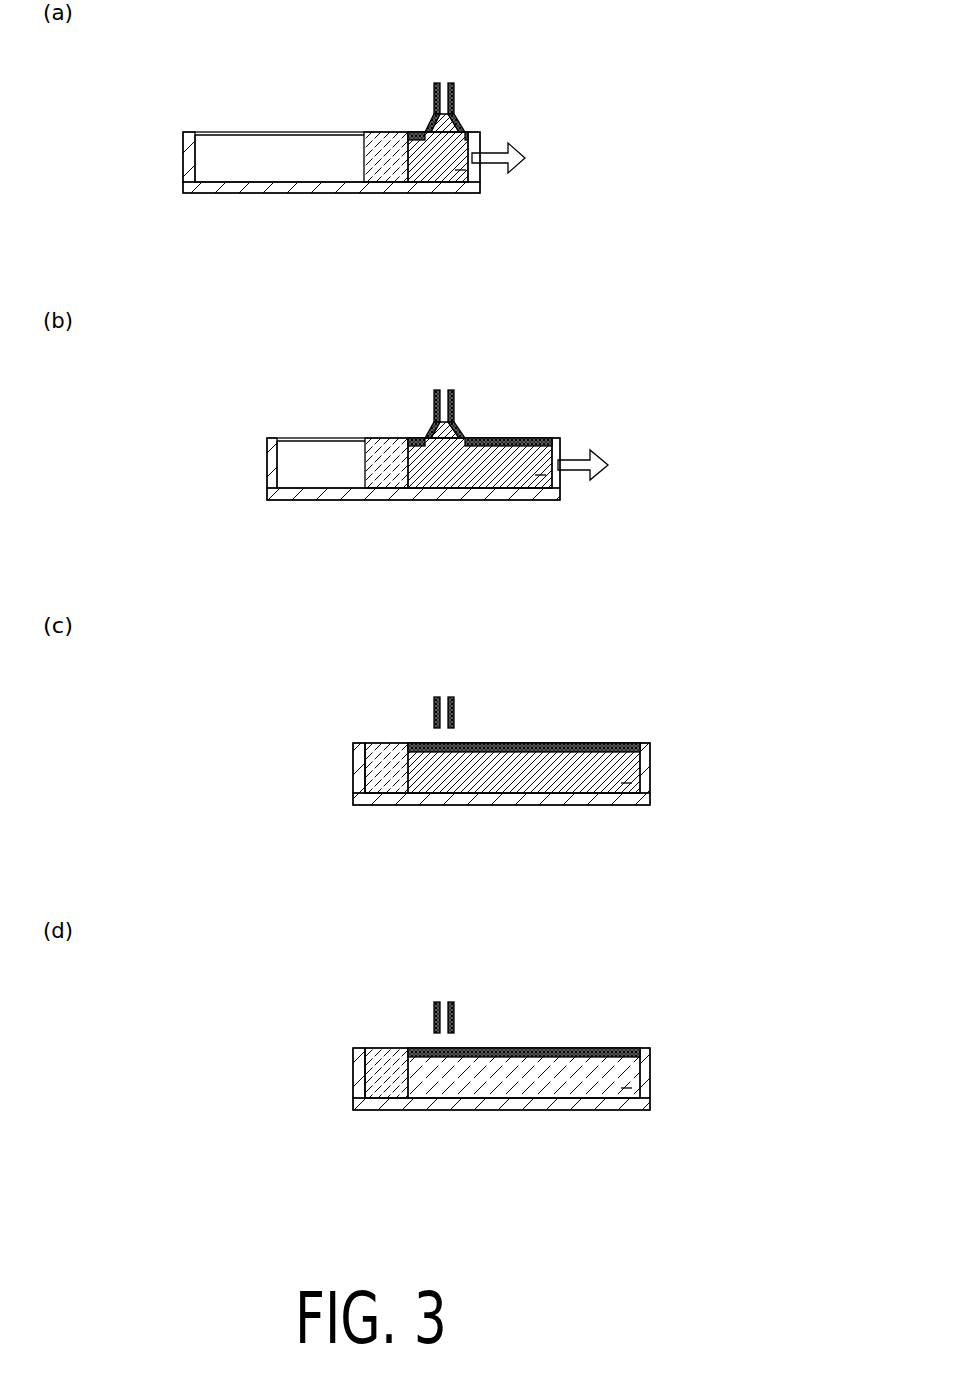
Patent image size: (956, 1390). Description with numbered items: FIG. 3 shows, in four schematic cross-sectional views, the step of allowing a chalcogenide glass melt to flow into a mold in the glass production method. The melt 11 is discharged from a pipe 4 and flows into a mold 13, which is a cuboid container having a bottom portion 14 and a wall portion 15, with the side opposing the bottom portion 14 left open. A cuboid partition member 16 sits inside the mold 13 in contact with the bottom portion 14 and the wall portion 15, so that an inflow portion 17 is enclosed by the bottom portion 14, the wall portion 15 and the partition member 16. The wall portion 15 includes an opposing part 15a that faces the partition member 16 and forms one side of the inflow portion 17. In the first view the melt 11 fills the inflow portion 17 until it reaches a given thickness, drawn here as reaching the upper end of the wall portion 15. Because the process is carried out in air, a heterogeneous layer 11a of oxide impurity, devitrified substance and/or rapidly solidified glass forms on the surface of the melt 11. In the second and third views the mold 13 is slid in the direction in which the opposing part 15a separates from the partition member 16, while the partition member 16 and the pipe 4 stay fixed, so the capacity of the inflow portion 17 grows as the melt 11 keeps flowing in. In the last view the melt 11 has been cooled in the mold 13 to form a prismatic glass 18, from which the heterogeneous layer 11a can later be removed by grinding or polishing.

The pipe 4 is at (455, 105).
The melt 11 is at (418, 184).
The heterogeneous layer 11a is at (412, 132).
The mold 13 is at (208, 202).
The bottom portion 14 is at (445, 186).
The wall portion 15 is at (183, 153).
The opposing part 15a is at (481, 136).
The partition member 16 is at (377, 132).
The inflow portion 17 is at (462, 170).
The glass 18 is at (588, 1100).